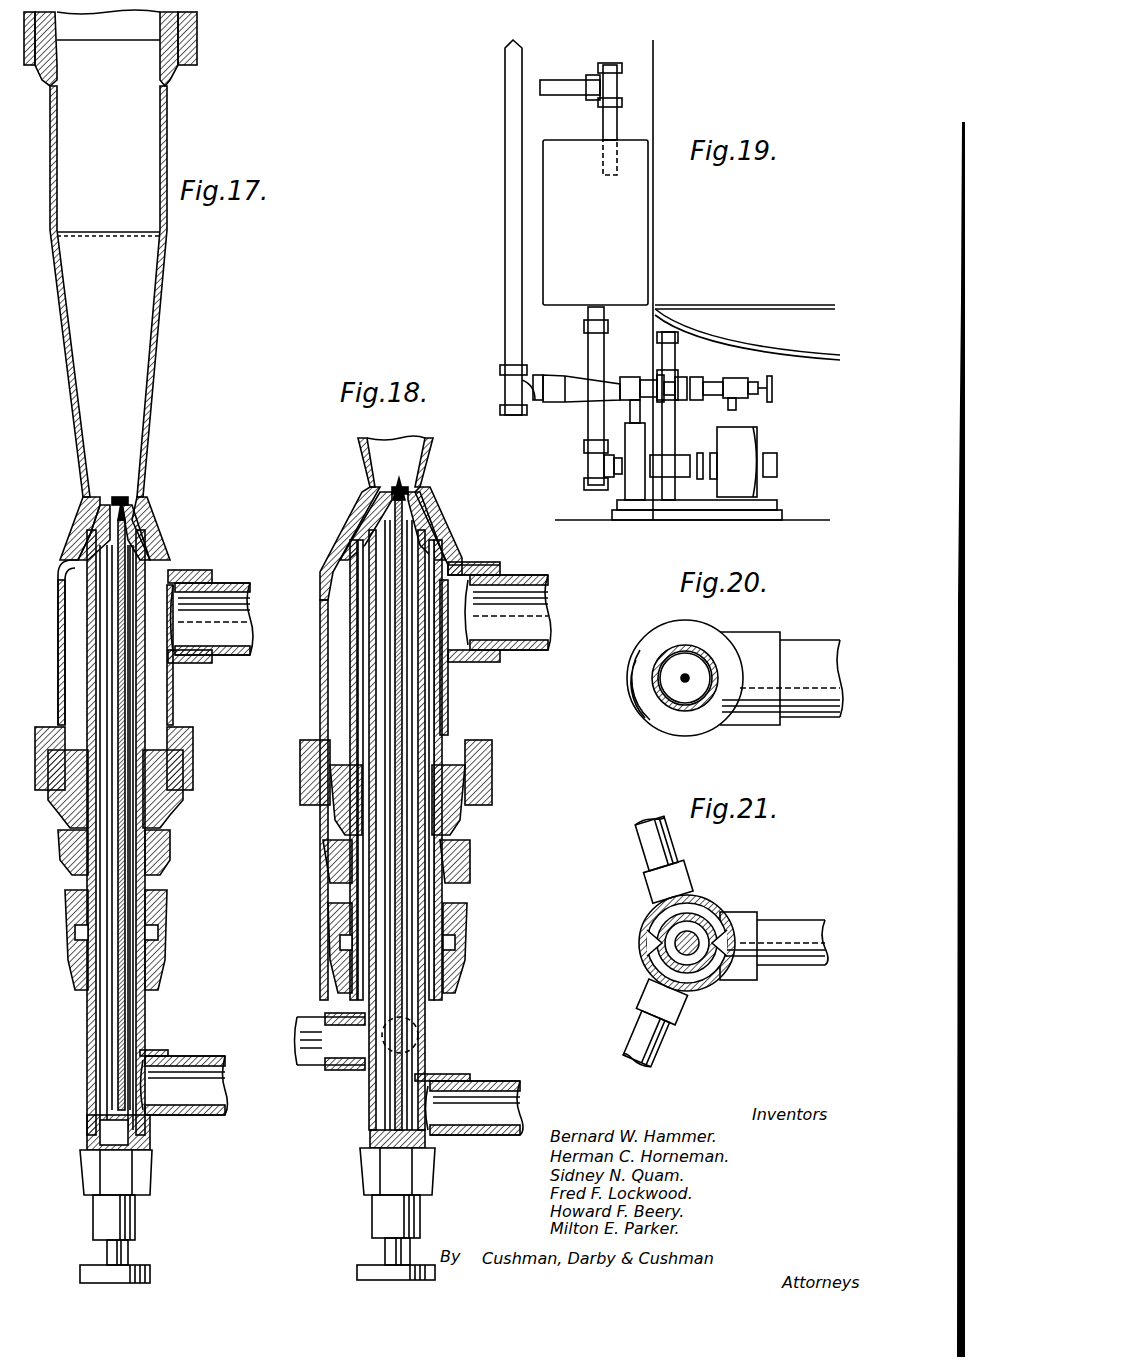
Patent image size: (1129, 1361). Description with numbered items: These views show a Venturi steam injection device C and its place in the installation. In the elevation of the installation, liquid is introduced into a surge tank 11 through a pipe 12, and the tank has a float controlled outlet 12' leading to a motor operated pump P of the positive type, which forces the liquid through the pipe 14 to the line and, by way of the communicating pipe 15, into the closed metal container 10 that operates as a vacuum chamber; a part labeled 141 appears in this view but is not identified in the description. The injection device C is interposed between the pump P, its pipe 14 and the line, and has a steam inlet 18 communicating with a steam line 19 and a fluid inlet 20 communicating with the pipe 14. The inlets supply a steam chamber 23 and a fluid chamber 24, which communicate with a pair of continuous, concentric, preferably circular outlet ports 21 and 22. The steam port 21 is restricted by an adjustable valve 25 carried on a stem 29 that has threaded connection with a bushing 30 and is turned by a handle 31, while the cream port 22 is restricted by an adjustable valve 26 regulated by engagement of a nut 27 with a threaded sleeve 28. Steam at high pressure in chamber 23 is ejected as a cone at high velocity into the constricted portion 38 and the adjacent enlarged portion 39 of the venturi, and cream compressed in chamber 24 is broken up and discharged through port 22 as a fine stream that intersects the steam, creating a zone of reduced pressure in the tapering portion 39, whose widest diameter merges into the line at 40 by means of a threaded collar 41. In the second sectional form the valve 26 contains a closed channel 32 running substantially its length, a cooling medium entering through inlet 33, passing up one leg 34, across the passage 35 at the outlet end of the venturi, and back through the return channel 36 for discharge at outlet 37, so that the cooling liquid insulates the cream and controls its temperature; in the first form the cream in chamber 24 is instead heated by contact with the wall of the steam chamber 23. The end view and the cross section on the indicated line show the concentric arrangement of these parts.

In FIG. 19, the closed metal container 10 is at (695, 280).
In FIG. 19, the surge tank 11 is at (595, 222).
In FIG. 19, the pipe 12 is at (581, 113).
In FIG. 19, the float controlled outlet 12' is at (614, 398).
In FIG. 17, the pipe or connection 14 is at (238, 582).
In FIG. 18, the pipe or connection 14 is at (530, 578).
In FIG. 19, the pipe or connection 14 is at (630, 418).
In FIG. 20, the pipe or connection 14 is at (805, 645).
In FIG. 19, the communicating pipe or connection 15 is at (538, 376).
In FIG. 17, the steam inlet 18 is at (160, 1050).
In FIG. 18, the steam inlet 18 is at (455, 1076).
In FIG. 19, the steam inlet 18 is at (728, 386).
In FIG. 17, the steam line 19 is at (204, 1058).
In FIG. 18, the steam line 19 is at (500, 1084).
In FIG. 19, the steam line 19 is at (738, 406).
In FIG. 17, the fluid inlet 20 is at (235, 507).
In FIG. 18, the fluid inlet 20 is at (478, 568).
In FIG. 19, the fluid inlet 20 is at (622, 380).
In FIG. 21, the fluid inlet 20 is at (742, 918).
In FIG. 17, the steam outlet port 21 is at (124, 503).
In FIG. 18, the steam outlet port 21 is at (406, 498).
In FIG. 20, the steam outlet port 21 is at (683, 676).
In FIG. 17, the cream outlet port 22 is at (152, 512).
In FIG. 18, the cream outlet port 22 is at (432, 516).
In FIG. 17, the steam chamber 23 is at (130, 712).
In FIG. 18, the steam chamber 23 is at (410, 718).
In FIG. 17, the fluid chamber 24 is at (150, 680).
In FIG. 18, the fluid chamber 24 is at (452, 685).
In FIG. 17, the adjustable valve 25 is at (82, 546).
In FIG. 18, the adjustable valve 25 is at (372, 522).
In FIG. 20, the adjustable valve 25 is at (668, 702).
In FIG. 17, the adjustable valve 26 is at (78, 526).
In FIG. 18, the adjustable valve 26 is at (366, 506).
In FIG. 20, the adjustable valve 26 is at (692, 690).
In FIG. 17, the nut 27 is at (160, 918).
In FIG. 18, the nut 27 is at (466, 945).
In FIG. 17, the threaded sleeve 28 is at (80, 915).
In FIG. 18, the threaded sleeve 28 is at (462, 890).
In FIG. 17, the stem 29 is at (115, 880).
In FIG. 18, the stem 29 is at (368, 1090).
In FIG. 17, the bushing 30 is at (105, 1128).
In FIG. 18, the bushing 30 is at (372, 1140).
In FIG. 17, the handle 31 is at (85, 1272).
In FIG. 18, the handle 31 is at (375, 1270).
In FIG. 18, the closed channel 32 is at (355, 676).
In FIG. 18, the inlet 33 is at (305, 1040).
In FIG. 21, the inlet 33 is at (668, 1035).
In FIG. 18, the leg of channel 34 is at (360, 893).
In FIG. 21, the leg of channel 34 is at (650, 960).
In FIG. 18, the passage 35 is at (452, 545).
In FIG. 18, the return channel 36 is at (365, 815).
In FIG. 21, the return channel 36 is at (700, 902).
In FIG. 18, the outlet 37 is at (425, 1032).
In FIG. 21, the outlet 37 is at (650, 835).
In FIG. 17, the constricted portion 38 is at (100, 492).
In FIG. 18, the constricted portion 38 is at (368, 482).
In FIG. 17, the enlarged tapering portion 39 is at (113, 440).
In FIG. 18, the enlarged tapering portion 39 is at (408, 445).
In FIG. 17, the connection to line 40 is at (185, 62).
In FIG. 17, the threaded collar 41 is at (197, 40).
In FIG. 19, the threaded collar 41 is at (530, 410).
In FIG. 19, the hood 141 is at (822, 360).
In FIG. 19, the steam injection device C is at (632, 384).
In FIG. 19, the motor operated pump P is at (628, 480).